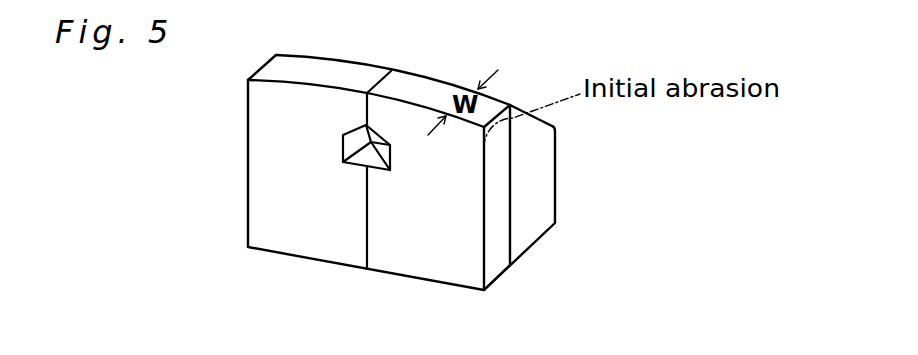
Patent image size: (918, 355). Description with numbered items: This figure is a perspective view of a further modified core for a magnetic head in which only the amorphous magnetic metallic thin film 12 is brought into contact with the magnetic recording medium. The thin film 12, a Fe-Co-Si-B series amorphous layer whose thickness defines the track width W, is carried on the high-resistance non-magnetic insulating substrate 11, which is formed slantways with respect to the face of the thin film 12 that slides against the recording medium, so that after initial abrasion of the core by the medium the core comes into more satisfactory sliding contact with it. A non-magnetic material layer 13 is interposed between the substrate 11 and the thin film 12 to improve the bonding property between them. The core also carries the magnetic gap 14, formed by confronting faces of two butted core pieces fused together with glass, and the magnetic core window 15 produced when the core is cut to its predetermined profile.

The non-magnetic insulating substrate 11 is at (545, 211).
The amorphous magnetic metallic thin film 12 is at (450, 270).
The non-magnetic material layer 13 is at (513, 264).
The magnetic gap 14 is at (374, 77).
The magnetic core window 15 is at (352, 145).